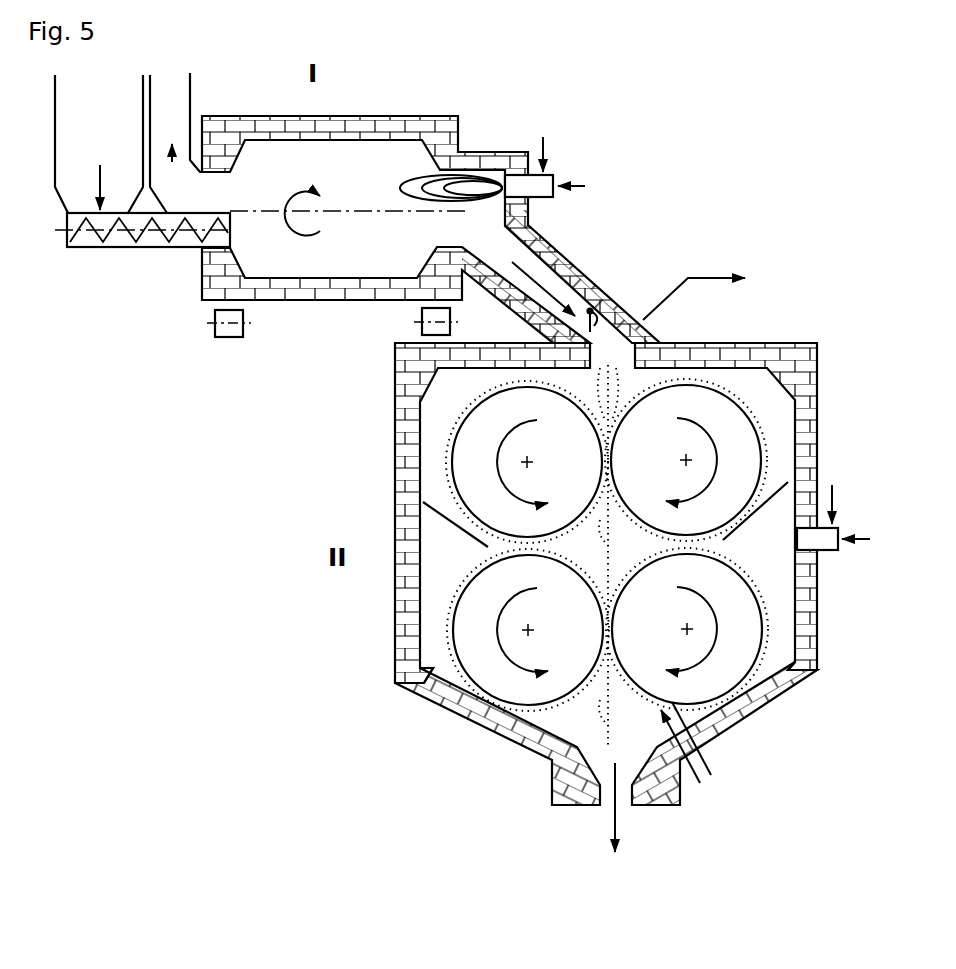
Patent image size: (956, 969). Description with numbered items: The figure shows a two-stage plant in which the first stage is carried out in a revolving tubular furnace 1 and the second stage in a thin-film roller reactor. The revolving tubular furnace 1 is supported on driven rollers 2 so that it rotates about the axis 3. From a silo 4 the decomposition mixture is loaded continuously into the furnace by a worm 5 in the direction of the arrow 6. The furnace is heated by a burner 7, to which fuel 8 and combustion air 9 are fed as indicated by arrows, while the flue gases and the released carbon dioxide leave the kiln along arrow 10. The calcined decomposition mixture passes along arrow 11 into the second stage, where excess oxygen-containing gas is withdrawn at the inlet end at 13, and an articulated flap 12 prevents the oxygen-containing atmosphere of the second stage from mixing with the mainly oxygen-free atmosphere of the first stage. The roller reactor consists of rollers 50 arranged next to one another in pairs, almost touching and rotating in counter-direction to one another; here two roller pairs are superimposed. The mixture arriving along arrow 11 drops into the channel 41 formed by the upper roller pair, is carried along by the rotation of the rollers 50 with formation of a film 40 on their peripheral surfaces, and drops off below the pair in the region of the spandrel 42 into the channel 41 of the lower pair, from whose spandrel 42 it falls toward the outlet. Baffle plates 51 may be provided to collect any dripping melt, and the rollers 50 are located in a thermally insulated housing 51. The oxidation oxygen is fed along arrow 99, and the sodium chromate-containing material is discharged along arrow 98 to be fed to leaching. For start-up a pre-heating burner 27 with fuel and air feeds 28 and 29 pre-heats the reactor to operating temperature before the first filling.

The revolving tubular furnace 1 is at (310, 300).
The driven rollers 2 is at (229, 338).
The axis 3 is at (357, 216).
The silo 4 is at (55, 152).
The worm 5 is at (128, 248).
The arrow 6 is at (106, 178).
The burner 7 is at (545, 198).
The fuel 8 is at (572, 180).
The combustion air 9 is at (545, 148).
The arrow 10 is at (170, 166).
The arrow 11 is at (550, 290).
The articulated flap 12 is at (598, 312).
The gas withdrawal 13 is at (712, 278).
The pre-heating burner 27 is at (837, 552).
The fuel feed 28 is at (852, 528).
The air feed 29 is at (836, 486).
The film 40 is at (447, 468).
The channel 41 is at (600, 408).
The spandrel 42 is at (604, 512).
The rollers 50 is at (574, 453).
The baffle plates 51 is at (438, 518).
The arrow 98 is at (617, 820).
The arrow 99 is at (703, 783).